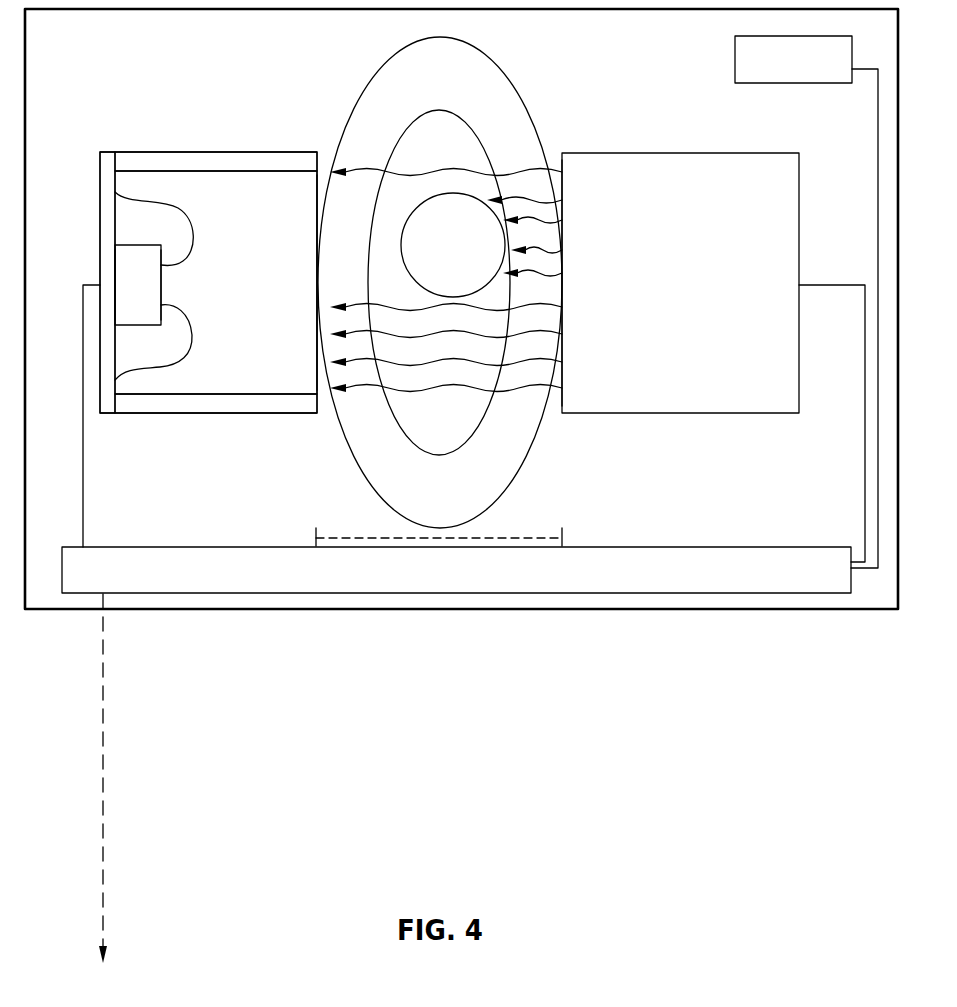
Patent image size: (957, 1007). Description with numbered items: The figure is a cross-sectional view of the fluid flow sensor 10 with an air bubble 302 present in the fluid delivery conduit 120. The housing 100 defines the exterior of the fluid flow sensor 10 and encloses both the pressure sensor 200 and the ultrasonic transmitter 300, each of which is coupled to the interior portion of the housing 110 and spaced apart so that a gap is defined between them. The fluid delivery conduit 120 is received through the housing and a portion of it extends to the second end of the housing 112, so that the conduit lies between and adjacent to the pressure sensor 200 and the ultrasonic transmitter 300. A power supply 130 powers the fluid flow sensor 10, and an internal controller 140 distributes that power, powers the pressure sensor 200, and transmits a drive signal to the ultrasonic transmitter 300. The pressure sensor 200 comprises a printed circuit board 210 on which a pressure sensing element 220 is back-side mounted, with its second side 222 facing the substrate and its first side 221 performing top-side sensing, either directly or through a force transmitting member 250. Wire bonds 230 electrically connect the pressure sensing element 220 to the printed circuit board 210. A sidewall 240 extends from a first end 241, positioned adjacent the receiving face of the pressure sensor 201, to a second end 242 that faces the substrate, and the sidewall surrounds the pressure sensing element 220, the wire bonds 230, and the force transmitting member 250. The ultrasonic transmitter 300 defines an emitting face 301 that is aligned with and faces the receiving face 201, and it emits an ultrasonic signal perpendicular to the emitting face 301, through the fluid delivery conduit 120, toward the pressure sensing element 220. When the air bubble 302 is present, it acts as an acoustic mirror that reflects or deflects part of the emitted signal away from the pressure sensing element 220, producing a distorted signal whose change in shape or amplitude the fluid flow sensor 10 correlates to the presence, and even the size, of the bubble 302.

The fluid flow sensor 10 is at (661, 747).
The housing 100 is at (280, 609).
The interior portion of the housing 110 is at (740, 507).
The second end of the housing 112 is at (520, 538).
The fluid delivery conduit 120 is at (513, 73).
The power supply 130 is at (815, 72).
The internal controller 140 is at (480, 587).
The pressure sensor 200 is at (204, 112).
The receiving face of the pressure sensor 201 is at (317, 323).
The printed circuit board 210 is at (100, 168).
The pressure sensing element 220 is at (155, 306).
The first side of the pressure sensing element 221 is at (161, 283).
The second side of the pressure sensing element 222 is at (113, 255).
The wire bonds 230 is at (182, 210).
The sidewall 240 is at (223, 413).
The first end of the sidewall 241 is at (113, 163).
The second end of the sidewall 242 is at (313, 163).
The force transmitting member 250 is at (290, 317).
The ultrasonic transmitter 300 is at (697, 301).
The emitting face of the ultrasonic transmitter 301 is at (562, 350).
The air bubble 302 is at (472, 261).